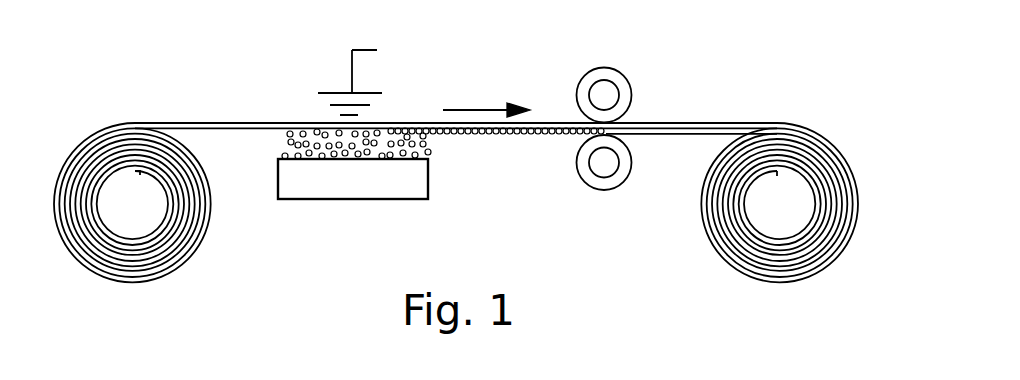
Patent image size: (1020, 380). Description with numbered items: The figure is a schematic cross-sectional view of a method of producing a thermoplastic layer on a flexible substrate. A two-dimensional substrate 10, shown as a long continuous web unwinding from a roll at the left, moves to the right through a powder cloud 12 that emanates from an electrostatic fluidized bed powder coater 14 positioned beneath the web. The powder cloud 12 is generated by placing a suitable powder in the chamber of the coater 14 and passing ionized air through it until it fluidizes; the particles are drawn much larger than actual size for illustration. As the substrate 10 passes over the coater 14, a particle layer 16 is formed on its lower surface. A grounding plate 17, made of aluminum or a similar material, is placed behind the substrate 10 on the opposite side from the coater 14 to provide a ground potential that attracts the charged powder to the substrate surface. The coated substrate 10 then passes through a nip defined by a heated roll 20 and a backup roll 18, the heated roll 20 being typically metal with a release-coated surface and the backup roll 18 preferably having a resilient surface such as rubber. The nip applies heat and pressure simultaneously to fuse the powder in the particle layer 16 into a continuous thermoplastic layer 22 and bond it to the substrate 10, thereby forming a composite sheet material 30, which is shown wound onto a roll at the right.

The two-dimensional substrate 10 is at (248, 122).
The powder cloud 12 is at (288, 147).
The electrostatic fluidized bed powder coater 14 is at (410, 178).
The particle layer 16 is at (532, 136).
The grounding plate 17 is at (350, 70).
The backup roll 18 is at (613, 80).
The heated roll 20 is at (623, 170).
The continuous thermoplastic layer 22 is at (690, 135).
The composite sheet material 30 is at (725, 123).